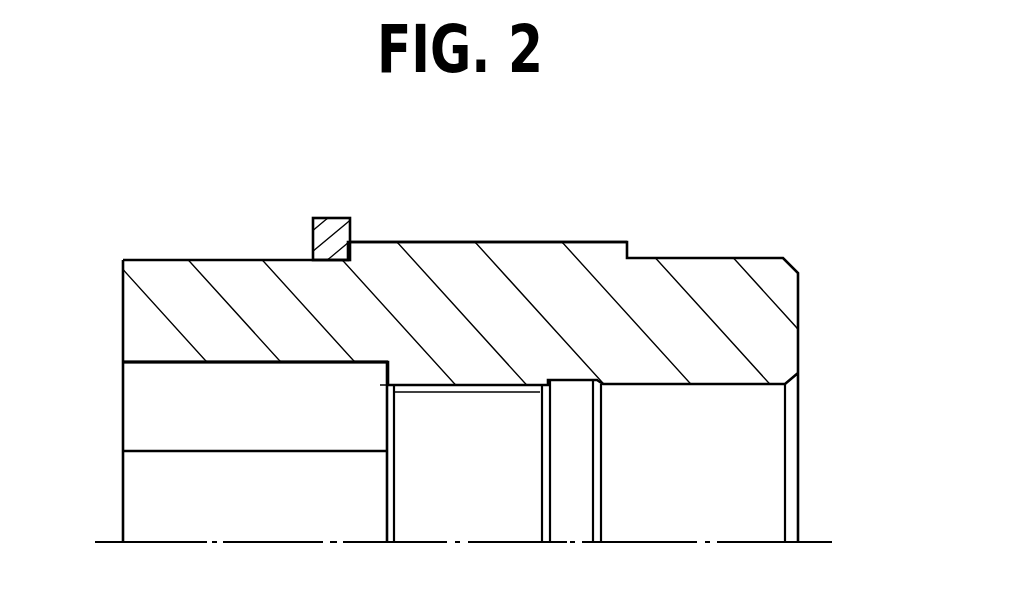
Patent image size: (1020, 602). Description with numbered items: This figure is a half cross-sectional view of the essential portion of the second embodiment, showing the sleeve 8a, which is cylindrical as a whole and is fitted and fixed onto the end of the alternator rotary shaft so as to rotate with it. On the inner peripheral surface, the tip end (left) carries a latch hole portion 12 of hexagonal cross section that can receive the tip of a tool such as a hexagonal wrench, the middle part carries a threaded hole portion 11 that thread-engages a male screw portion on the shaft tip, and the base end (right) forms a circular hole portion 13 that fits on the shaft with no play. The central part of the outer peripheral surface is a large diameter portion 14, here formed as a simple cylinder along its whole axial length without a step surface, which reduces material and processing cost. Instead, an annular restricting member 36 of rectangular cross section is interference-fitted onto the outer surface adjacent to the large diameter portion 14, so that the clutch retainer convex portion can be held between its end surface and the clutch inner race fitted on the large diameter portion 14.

The sleeve 8a is at (768, 318).
The restricting member 36 is at (322, 218).
The large diameter portion 14 is at (448, 240).
The latch hole portion 12 is at (176, 365).
The threaded hole portion 11 is at (450, 387).
The circular hole portion 13 is at (672, 386).